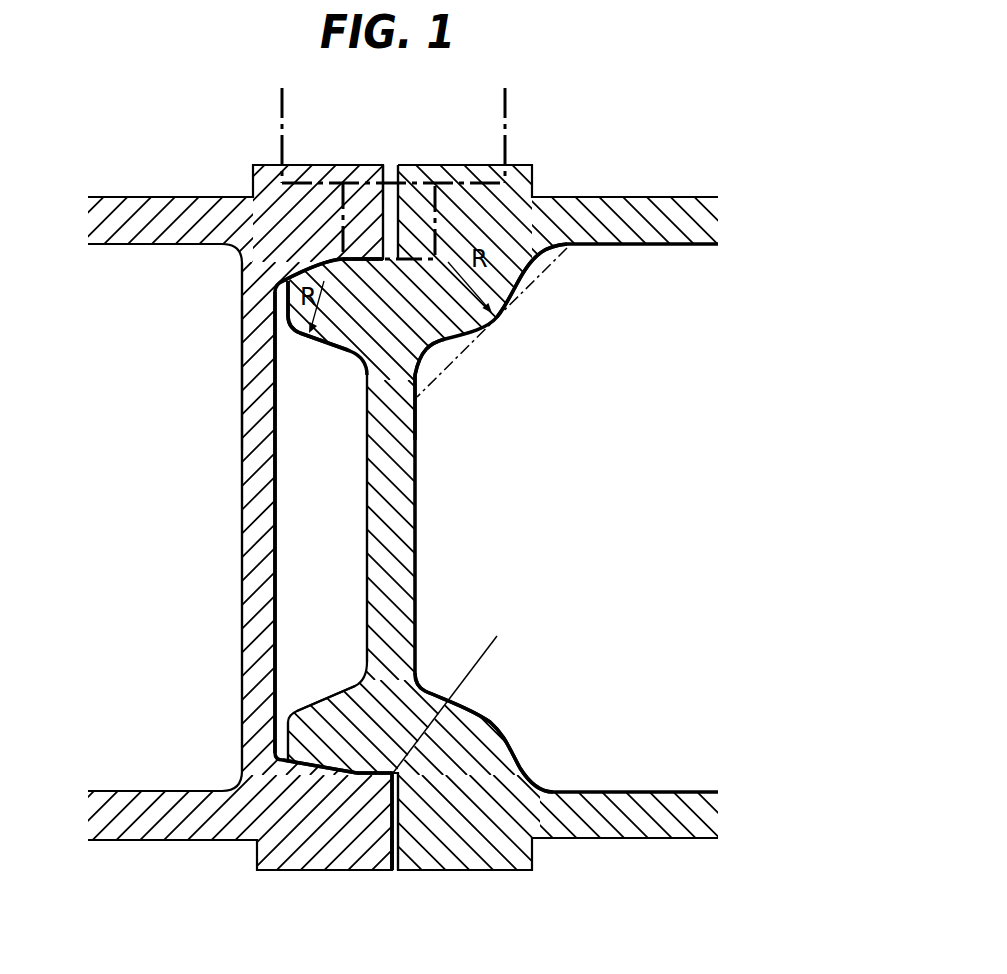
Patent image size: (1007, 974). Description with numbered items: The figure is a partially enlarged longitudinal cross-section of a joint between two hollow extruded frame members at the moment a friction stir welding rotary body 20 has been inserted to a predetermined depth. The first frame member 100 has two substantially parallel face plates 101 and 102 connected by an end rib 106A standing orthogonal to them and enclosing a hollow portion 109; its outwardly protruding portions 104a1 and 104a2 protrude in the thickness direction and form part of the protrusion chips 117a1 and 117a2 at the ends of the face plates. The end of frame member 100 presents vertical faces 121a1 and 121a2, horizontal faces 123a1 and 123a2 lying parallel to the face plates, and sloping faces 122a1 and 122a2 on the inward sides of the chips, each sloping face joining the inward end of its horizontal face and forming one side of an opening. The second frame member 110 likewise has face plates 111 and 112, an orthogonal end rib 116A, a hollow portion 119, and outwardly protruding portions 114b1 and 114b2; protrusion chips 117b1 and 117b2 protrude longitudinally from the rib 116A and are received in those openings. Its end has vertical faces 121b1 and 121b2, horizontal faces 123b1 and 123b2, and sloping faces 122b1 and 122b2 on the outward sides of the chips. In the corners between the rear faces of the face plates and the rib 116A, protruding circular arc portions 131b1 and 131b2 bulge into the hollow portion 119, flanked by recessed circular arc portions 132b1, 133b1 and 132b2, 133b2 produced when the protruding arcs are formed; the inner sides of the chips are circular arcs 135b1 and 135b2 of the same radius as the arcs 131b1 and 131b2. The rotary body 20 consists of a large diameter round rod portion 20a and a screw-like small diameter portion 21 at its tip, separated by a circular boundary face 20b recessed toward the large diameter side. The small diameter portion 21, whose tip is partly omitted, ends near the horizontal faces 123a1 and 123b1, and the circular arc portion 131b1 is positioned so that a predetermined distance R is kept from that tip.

The first hollow extruded frame member 100 is at (186, 138).
The face plate 101 is at (131, 213).
The face plate 102 is at (145, 833).
The outwardly protruding portion 104a1 is at (258, 166).
The outwardly protruding portion 104a2 is at (265, 855).
The end rib 106A is at (239, 456).
The hollow portion 109 is at (198, 376).
The second hollow extruded frame member 110 is at (645, 100).
The face plate 111 is at (660, 213).
The face plate 112 is at (627, 817).
The outwardly protruding portion 114b1 is at (519, 166).
The outwardly protruding portion 114b2 is at (483, 853).
The end rib 116A is at (398, 522).
The protrusion chip 117a1 is at (352, 215).
The protrusion chip 117a2 is at (343, 853).
The protrusion chip 117b1 is at (286, 306).
The protrusion chip 117b2 is at (287, 718).
The hollow portion 119 is at (527, 428).
The vertical face 121a1 is at (389, 258).
The vertical face 121a2 is at (388, 872).
The vertical face 121b1 is at (405, 178).
The vertical face 121b2 is at (422, 845).
The sloping face 122a1 is at (310, 273).
The sloping face 122a2 is at (295, 780).
The sloping face 122b1 is at (328, 276).
The sloping face 122b2 is at (312, 727).
The horizontal face 123a1 is at (386, 166).
The horizontal face 123a2 is at (373, 817).
The horizontal face 123b1 is at (463, 331).
The horizontal face 123b2 is at (485, 695).
The circular arc portion 131b1 is at (499, 318).
The circular arc portion 131b2 is at (490, 715).
The recessed circular arc portion 132b1 is at (423, 375).
The recessed circular arc portion 132b2 is at (423, 690).
The recessed circular arc portion 133b1 is at (537, 256).
The recessed circular arc portion 133b2 is at (520, 763).
The circular arc 135b1 is at (320, 340).
The circular arc 135b2 is at (330, 693).
The rotary body 20 is at (437, 146).
The large diameter round rod portion 20a is at (508, 96).
The boundary face 20b is at (433, 182).
The small diameter portion 21 is at (437, 213).